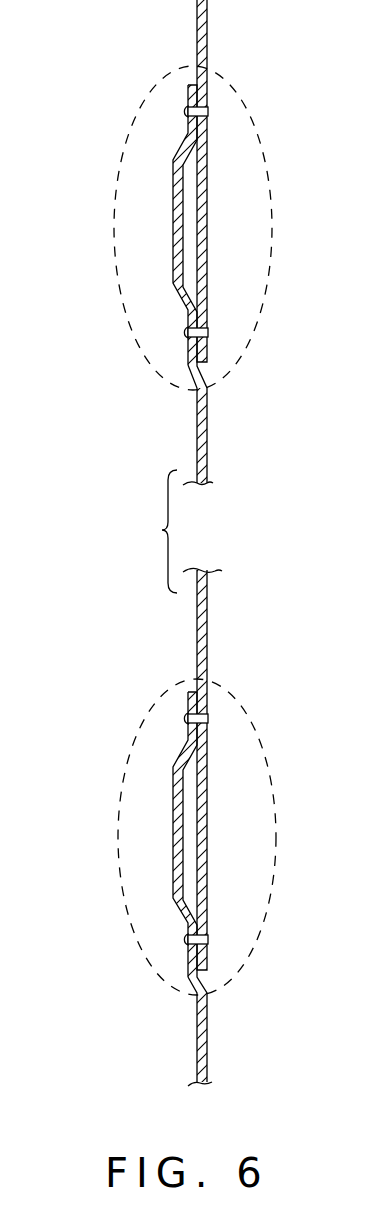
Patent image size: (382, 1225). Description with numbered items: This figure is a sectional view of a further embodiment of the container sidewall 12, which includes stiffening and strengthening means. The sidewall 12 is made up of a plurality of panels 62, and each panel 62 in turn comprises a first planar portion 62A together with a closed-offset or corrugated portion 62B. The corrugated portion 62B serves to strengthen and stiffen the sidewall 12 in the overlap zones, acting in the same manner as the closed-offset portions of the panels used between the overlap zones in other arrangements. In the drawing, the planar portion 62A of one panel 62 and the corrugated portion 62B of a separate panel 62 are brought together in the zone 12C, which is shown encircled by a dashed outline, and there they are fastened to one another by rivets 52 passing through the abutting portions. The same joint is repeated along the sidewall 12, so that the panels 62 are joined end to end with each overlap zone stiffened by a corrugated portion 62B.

The sidewall 12 is at (60, 272).
The zone 12C is at (243, 101).
The rivets 52 is at (182, 111).
The panels 62 is at (264, 440).
The first planar portion 62A is at (207, 50).
The closed-offset or corrugated portion 62B is at (173, 237).